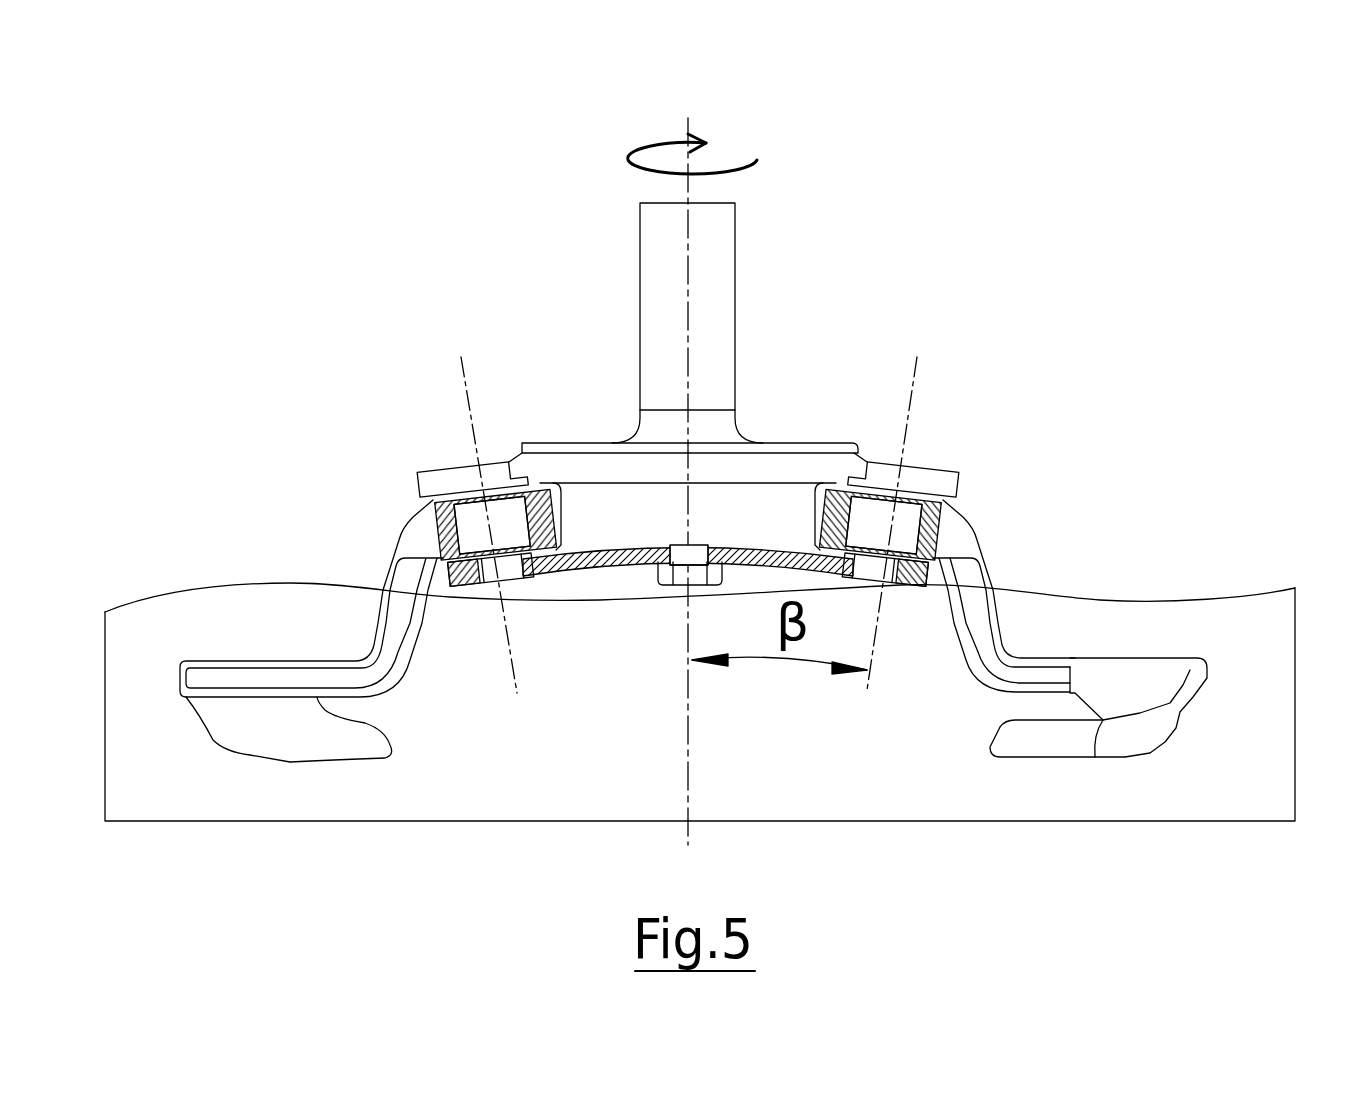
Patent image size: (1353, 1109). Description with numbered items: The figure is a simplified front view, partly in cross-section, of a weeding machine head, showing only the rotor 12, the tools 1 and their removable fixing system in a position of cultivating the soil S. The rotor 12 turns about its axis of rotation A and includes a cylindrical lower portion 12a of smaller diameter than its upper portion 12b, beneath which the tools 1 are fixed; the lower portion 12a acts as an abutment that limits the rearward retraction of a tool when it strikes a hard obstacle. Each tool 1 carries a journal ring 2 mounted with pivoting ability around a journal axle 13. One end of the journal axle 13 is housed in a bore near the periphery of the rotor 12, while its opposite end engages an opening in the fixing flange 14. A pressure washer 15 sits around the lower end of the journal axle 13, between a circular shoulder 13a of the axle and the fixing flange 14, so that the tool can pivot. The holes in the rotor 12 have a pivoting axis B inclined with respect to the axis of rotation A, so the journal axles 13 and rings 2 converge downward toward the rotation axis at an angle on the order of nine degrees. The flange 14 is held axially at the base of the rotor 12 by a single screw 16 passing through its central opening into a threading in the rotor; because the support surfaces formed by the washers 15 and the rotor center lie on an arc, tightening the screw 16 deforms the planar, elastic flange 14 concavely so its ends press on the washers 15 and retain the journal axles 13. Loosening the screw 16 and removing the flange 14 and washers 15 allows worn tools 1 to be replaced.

The tool 1 is at (1133, 673).
The journal ring 2 is at (940, 528).
The rotor 12 is at (759, 305).
The cylindrical lower portion 12a is at (750, 505).
The upper portion 12b is at (945, 468).
The journal axle 13 is at (955, 485).
The circular shoulder 13a is at (918, 585).
The fixing flange 14 is at (562, 578).
The pressure washer 15 is at (955, 558).
The screw 16 is at (668, 585).
The soil S is at (1250, 630).
The axis of rotation A is at (692, 482).
The pivoting axis B is at (690, 528).